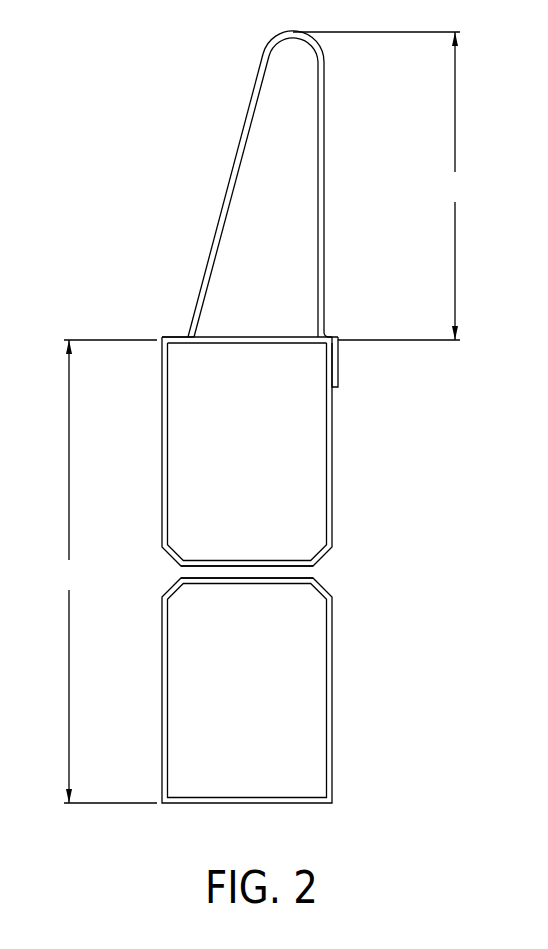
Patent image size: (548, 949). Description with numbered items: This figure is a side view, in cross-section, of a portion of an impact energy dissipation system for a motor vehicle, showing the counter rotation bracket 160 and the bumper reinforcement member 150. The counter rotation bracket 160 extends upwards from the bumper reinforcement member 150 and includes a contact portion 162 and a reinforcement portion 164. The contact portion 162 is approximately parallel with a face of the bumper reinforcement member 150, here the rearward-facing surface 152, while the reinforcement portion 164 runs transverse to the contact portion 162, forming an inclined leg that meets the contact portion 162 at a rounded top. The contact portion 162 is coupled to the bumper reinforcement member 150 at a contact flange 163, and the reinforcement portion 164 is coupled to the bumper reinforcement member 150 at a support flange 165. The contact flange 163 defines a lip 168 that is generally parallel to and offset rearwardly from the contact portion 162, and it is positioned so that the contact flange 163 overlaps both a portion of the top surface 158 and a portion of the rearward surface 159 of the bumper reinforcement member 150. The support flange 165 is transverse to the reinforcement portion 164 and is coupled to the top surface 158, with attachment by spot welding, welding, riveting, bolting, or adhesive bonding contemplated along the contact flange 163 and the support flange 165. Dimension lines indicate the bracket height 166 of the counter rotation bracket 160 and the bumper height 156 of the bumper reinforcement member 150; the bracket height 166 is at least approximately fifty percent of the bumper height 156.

The bumper reinforcement member 150 is at (356, 708).
The rearward-facing surface 152 is at (333, 458).
The bumper height 156 is at (102, 571).
The top surface 158 is at (270, 337).
The rearward surface 159 is at (333, 532).
The counter rotation bracket 160 is at (238, 101).
The contact portion 162 is at (326, 203).
The contact flange 163 is at (336, 334).
The reinforcement portion 164 is at (224, 196).
The support flange 165 is at (176, 336).
The bracket height 166 is at (385, 186).
The lip 168 is at (339, 368).